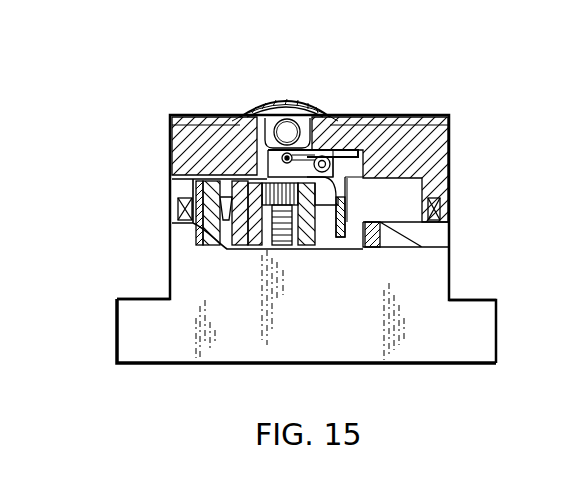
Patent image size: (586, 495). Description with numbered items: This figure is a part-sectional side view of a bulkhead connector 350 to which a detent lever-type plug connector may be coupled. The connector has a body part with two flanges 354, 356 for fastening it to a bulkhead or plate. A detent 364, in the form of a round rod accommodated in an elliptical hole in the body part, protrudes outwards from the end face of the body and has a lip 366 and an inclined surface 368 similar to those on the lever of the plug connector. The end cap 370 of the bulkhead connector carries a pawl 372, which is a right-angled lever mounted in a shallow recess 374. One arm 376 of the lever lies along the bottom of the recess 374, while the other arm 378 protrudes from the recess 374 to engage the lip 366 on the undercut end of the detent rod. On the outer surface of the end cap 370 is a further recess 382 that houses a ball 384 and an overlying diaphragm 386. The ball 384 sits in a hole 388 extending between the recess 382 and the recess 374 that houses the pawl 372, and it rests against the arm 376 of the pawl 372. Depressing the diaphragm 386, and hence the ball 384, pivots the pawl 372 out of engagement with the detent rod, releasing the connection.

The bulkhead connector 350 is at (122, 257).
The flange 354 is at (136, 366).
The flange 356 is at (490, 366).
The detent 364 is at (296, 248).
The lip 366 is at (300, 250).
The inclined surface 368 is at (325, 192).
The end cap 370 is at (428, 116).
The pawl 372 is at (378, 178).
The shallow recess 374 is at (267, 164).
The arm 376 is at (266, 163).
The arm 378 is at (320, 220).
The further recess 382 is at (336, 115).
The ball 384 is at (303, 113).
The diaphragm 386 is at (274, 109).
The hole 388 is at (252, 118).